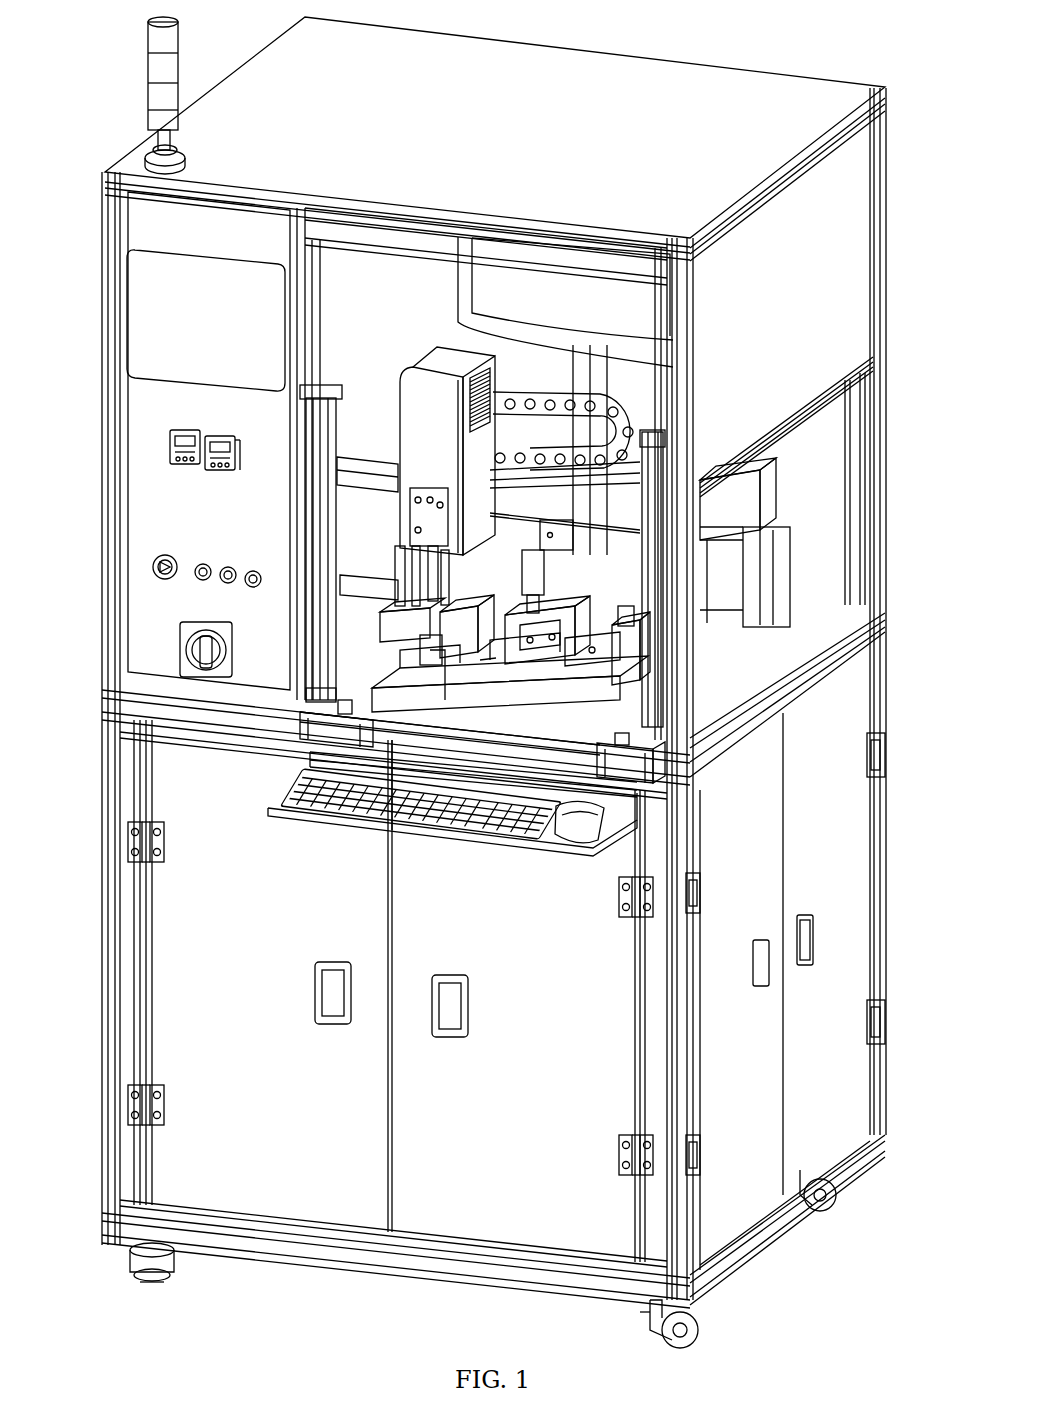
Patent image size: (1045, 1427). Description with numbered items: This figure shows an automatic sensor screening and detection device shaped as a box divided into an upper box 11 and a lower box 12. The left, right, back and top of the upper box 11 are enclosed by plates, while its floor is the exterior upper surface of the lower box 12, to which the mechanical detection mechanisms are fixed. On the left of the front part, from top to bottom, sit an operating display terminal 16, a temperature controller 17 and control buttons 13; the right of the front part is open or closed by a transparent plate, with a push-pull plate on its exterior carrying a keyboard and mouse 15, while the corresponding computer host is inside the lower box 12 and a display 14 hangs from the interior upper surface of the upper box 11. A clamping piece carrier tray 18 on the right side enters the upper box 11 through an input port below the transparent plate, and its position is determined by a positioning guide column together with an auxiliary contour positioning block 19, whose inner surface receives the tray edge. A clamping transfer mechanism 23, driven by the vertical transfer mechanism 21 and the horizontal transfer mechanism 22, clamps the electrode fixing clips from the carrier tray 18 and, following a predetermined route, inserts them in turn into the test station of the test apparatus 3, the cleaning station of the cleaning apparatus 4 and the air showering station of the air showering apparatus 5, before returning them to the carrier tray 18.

The upper box 11 is at (655, 175).
The lower box 12 is at (578, 1078).
The control buttons 13 is at (158, 563).
The display 14 is at (607, 298).
The keyboard and mouse 15 is at (578, 812).
The operating display terminal 16 is at (178, 325).
The temperature controller 17 is at (165, 444).
The clamping piece carrier tray 18 is at (640, 757).
The auxiliary contour positioning block 19 is at (650, 735).
The vertical transfer mechanism 21 is at (335, 520).
The horizontal transfer mechanism 22 is at (730, 490).
The clamping transfer mechanism 23 is at (435, 473).
The test apparatus 3 is at (545, 608).
The cleaning apparatus 4 is at (610, 705).
The air showering apparatus 5 is at (632, 648).